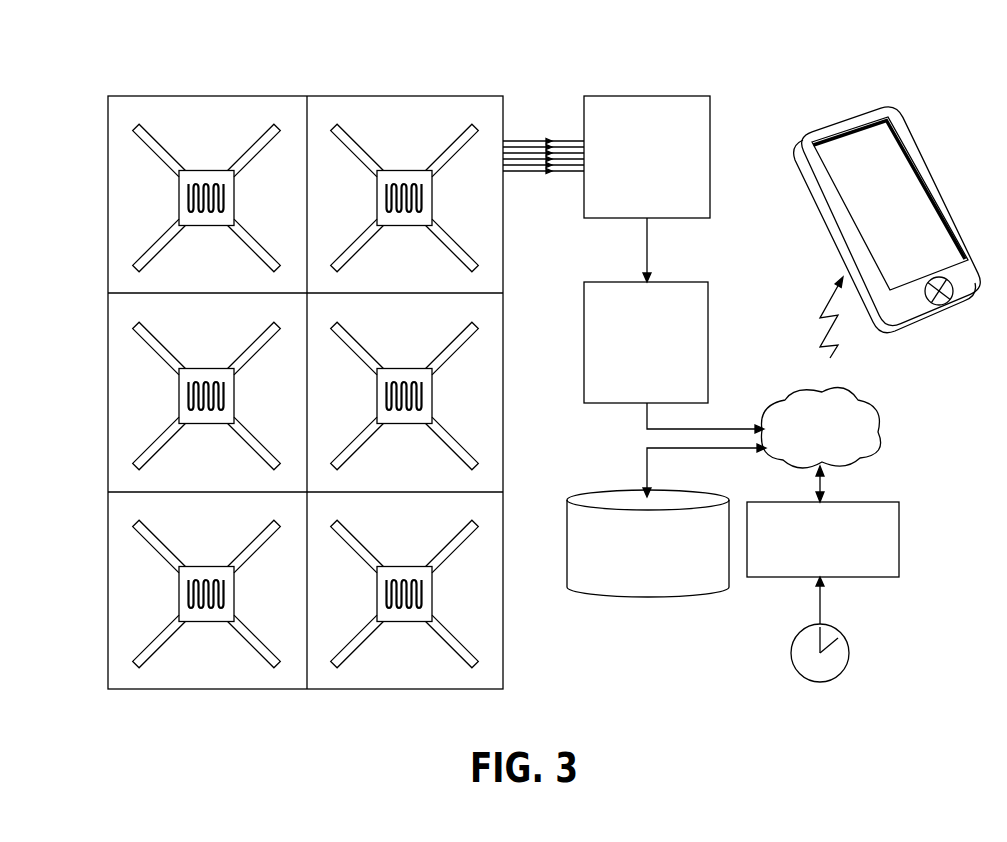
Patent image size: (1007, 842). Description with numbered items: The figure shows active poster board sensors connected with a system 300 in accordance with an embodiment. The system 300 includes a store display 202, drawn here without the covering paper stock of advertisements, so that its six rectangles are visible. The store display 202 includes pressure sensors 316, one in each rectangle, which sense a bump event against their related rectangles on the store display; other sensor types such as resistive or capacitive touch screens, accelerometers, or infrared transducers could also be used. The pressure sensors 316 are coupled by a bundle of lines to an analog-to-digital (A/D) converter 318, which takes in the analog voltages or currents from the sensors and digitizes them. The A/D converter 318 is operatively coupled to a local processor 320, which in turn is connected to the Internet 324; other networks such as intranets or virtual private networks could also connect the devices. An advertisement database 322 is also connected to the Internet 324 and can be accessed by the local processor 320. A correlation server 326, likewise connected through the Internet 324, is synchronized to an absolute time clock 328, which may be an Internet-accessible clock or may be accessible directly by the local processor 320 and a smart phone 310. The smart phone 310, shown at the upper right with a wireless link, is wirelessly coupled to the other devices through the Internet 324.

The system 300 is at (503, 358).
The store display 202 is at (207, 95).
The pressure sensors 316 is at (179, 591).
The analog-to-digital (A/D) converter 318 is at (631, 182).
The local processor 320 is at (630, 377).
The advertisement database 322 is at (632, 580).
The Internet 324 is at (806, 452).
The correlation server 326 is at (807, 573).
The absolute time clock 328 is at (791, 656).
The smart phone 310 is at (833, 120).